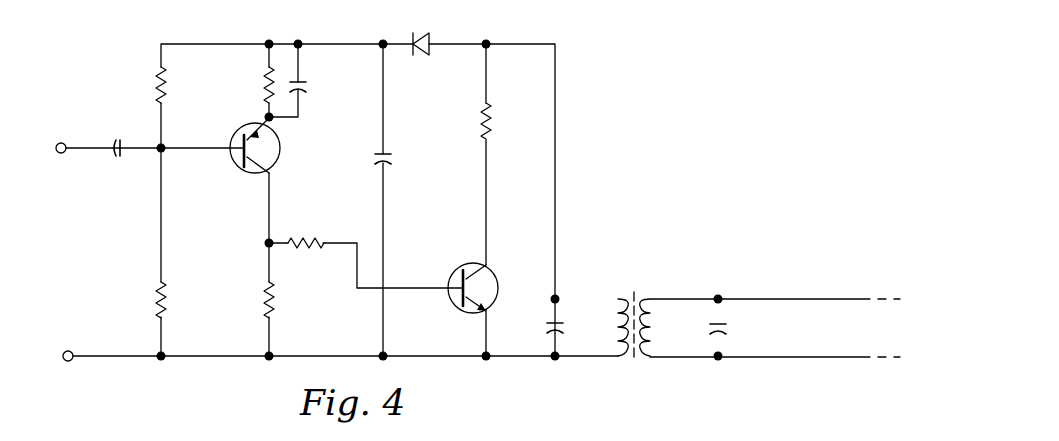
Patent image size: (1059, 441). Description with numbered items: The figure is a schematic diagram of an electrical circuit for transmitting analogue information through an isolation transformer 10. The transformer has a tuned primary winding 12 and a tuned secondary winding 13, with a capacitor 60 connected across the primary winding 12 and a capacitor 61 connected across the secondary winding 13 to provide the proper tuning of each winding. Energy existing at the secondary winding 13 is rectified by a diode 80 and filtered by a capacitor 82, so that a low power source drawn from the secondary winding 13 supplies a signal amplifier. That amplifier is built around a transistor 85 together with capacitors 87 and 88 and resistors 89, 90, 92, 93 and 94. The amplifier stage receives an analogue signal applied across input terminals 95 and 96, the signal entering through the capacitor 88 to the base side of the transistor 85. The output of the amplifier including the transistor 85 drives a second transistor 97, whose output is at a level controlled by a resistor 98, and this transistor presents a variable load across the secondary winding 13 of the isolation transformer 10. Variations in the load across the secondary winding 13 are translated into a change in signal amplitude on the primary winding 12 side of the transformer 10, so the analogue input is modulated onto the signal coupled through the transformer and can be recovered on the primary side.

The isolation transformer 10 is at (635, 290).
The primary winding 12 is at (650, 296).
The secondary winding 13 is at (618, 296).
The capacitor 60 is at (726, 330).
The capacitor 61 is at (563, 329).
The diode 80 is at (421, 32).
The capacitor 82 is at (391, 160).
The transistor 85 is at (281, 148).
The capacitor 87 is at (306, 88).
The capacitor 88 is at (121, 138).
The resistor 89 is at (263, 88).
The resistor 90 is at (167, 95).
The resistor 92 is at (167, 306).
The resistor 93 is at (275, 306).
The resistor 94 is at (309, 237).
The input terminal 95 is at (58, 153).
The input terminal 96 is at (71, 352).
The transistor 97 is at (499, 288).
The resistor 98 is at (492, 128).